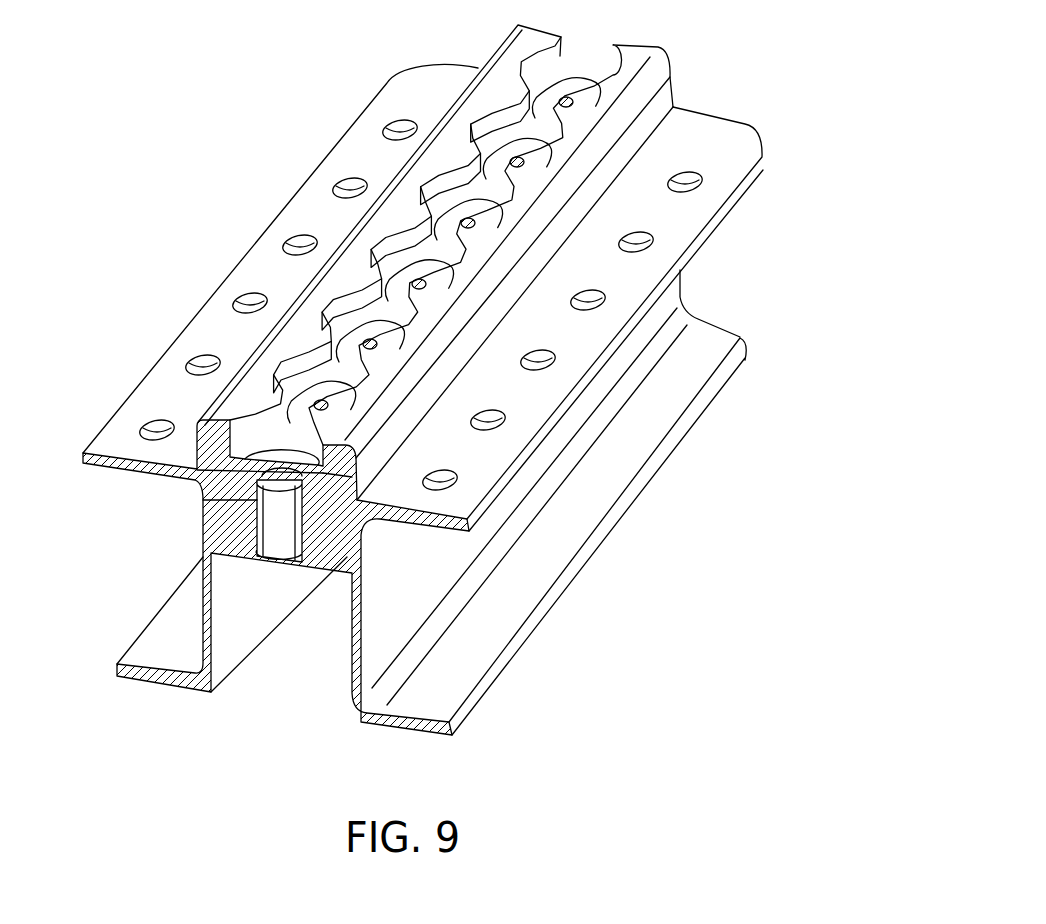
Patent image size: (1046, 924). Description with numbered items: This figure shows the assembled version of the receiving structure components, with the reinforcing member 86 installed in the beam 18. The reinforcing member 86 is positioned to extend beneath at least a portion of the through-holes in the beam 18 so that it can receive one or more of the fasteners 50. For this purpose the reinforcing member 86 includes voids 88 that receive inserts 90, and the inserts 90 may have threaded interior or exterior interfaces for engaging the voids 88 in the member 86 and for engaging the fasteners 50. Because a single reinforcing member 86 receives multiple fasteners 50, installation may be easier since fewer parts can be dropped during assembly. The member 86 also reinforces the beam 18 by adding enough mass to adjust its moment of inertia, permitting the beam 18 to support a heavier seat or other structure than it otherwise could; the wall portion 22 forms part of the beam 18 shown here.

The beam 18 is at (755, 128).
The rail wall 22 is at (672, 85).
The fasteners 50 is at (578, 80).
The reinforcing member 86 is at (334, 555).
The voids 88 is at (287, 545).
The inserts 90 is at (268, 553).